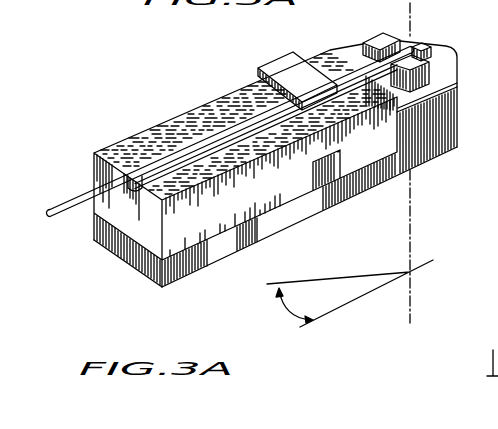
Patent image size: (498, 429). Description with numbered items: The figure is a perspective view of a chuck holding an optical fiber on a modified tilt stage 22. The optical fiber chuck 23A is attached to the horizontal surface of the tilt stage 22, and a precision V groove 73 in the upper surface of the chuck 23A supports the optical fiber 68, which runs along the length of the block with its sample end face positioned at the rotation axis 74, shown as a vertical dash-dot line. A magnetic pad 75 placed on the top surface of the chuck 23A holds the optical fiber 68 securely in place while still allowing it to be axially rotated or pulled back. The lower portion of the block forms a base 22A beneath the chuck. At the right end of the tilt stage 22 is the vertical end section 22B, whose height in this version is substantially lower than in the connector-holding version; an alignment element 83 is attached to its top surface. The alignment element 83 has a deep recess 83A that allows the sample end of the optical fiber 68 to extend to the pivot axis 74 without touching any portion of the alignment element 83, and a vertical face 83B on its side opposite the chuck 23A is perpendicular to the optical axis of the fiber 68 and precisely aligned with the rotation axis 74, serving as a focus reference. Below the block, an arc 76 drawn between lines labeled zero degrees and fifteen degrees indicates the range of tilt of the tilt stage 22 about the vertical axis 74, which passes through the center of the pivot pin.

The tilt stage 22 is at (427, 164).
The base plate of block 22A is at (334, 205).
The vertical end section 22B is at (446, 108).
The optical fiber chuck 23A is at (99, 185).
The optical fiber 68 is at (80, 208).
The precision V groove 73 is at (228, 132).
The rotation axis 74 is at (411, 13).
The magnetic pad 75 is at (268, 53).
The arc 76 is at (297, 308).
The alignment element 83 is at (433, 64).
The deep recess 83A is at (372, 43).
The vertical face 83B is at (432, 48).